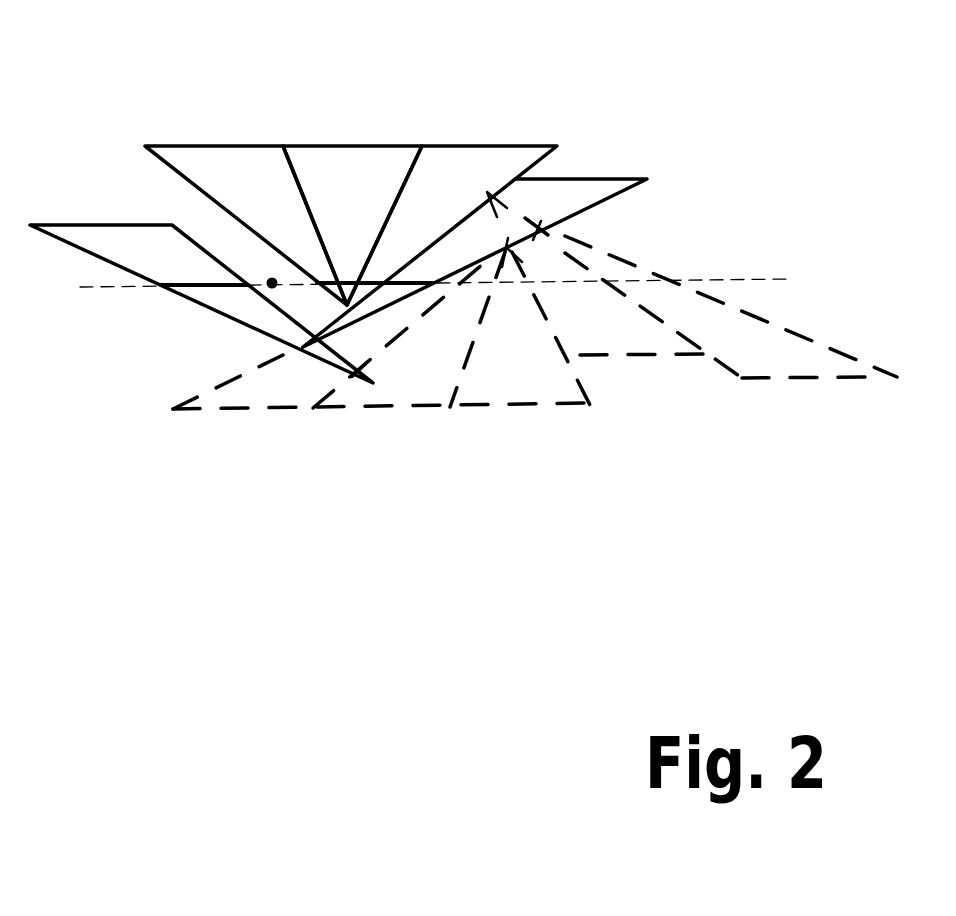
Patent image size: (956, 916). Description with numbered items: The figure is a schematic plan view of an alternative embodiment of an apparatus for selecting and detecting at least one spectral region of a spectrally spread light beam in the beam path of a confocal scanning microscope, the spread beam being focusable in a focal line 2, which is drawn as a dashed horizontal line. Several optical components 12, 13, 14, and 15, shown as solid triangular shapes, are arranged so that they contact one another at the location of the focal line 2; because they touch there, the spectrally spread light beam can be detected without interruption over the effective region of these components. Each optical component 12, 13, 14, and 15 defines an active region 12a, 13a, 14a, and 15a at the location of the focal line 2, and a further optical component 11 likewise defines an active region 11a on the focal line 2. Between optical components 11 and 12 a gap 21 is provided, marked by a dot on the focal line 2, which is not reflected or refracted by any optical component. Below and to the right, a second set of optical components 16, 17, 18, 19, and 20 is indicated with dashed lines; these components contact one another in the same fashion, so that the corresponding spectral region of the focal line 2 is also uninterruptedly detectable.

The focal line 2 is at (705, 279).
The optical component 11 is at (123, 250).
The active region 11a is at (207, 287).
The optical component 12 is at (227, 173).
The active region 12a is at (327, 283).
The optical component 13 is at (362, 180).
The active region 13a is at (348, 277).
The optical component 14 is at (450, 180).
The active region 14a is at (380, 280).
The optical component 15 is at (562, 192).
The active region 15a is at (420, 282).
The optical component 16 is at (273, 385).
The optical component 17 is at (388, 383).
The optical component 18 is at (513, 368).
The optical component 19 is at (615, 317).
The optical component 20 is at (753, 342).
The gap 21 is at (270, 280).